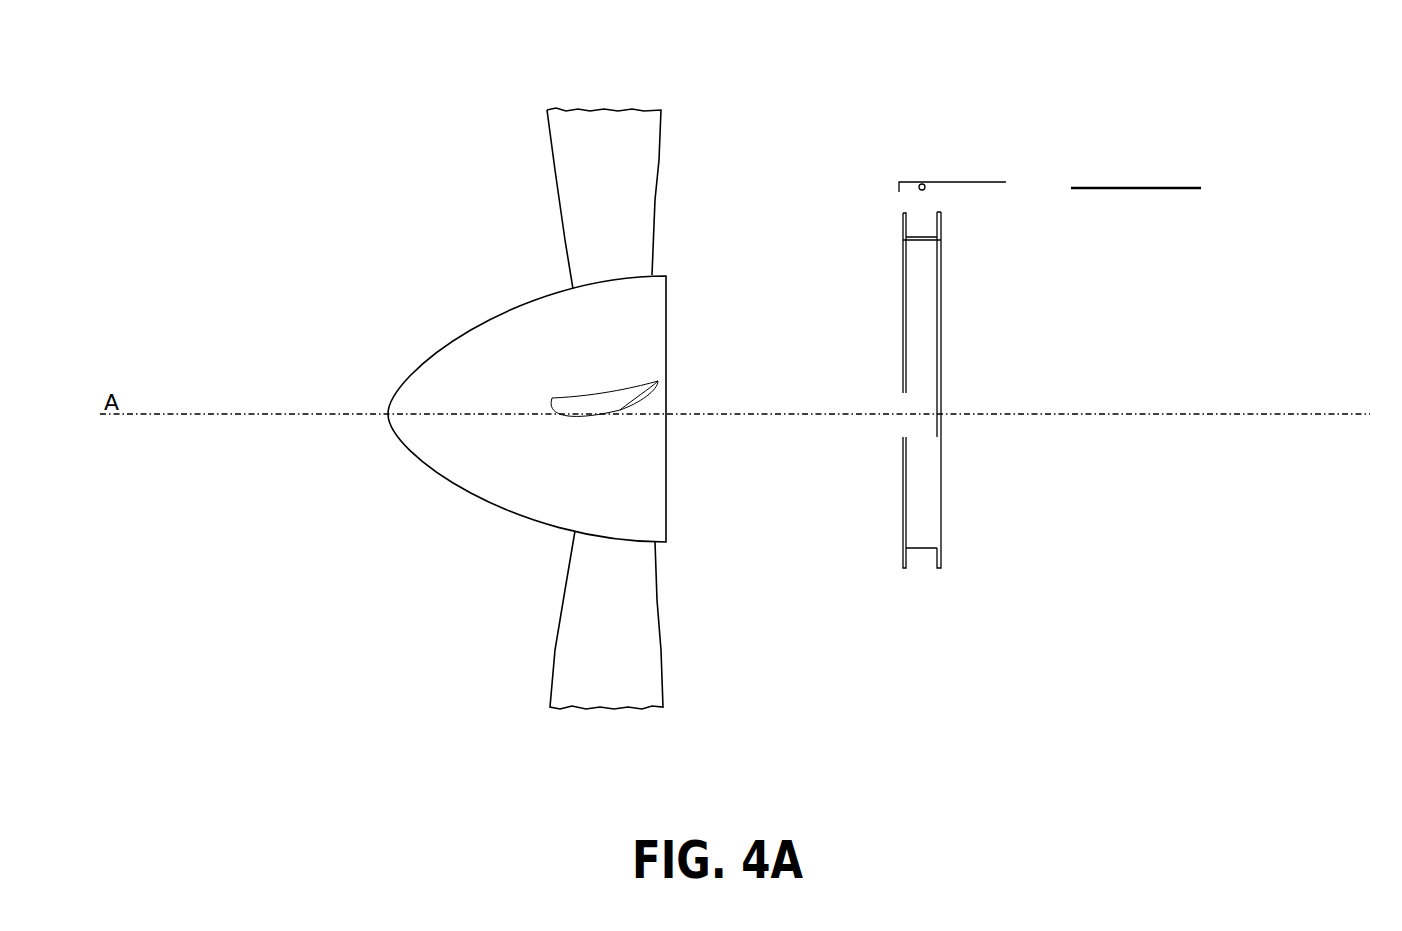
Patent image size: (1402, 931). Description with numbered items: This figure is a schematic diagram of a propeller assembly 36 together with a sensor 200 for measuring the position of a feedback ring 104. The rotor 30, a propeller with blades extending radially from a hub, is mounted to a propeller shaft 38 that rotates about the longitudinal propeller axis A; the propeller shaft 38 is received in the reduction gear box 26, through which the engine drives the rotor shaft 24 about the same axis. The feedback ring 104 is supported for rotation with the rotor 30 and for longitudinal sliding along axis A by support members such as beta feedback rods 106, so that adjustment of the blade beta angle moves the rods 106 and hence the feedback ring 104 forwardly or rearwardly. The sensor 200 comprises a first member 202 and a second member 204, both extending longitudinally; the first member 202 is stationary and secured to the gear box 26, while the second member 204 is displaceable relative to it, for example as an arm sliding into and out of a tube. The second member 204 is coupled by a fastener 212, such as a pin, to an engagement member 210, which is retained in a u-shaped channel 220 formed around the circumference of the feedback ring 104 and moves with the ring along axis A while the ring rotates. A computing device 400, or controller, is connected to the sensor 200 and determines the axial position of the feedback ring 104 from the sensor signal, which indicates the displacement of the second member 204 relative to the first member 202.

The rotor shaft 24 is at (846, 430).
The reduction gear box 26 is at (1083, 520).
The rotor 30 is at (570, 148).
The propeller assembly 36 is at (483, 525).
The propeller shaft 38 is at (487, 373).
The feedback ring 104 is at (920, 283).
The beta feedback rod 106 is at (722, 378).
The sensor 200 is at (1017, 110).
The first member 202 is at (1040, 183).
The second member 204 is at (964, 187).
The engagement member 210 is at (914, 170).
The fastener 212 is at (924, 190).
The channel 220 is at (907, 218).
The computing device 400 is at (1233, 175).